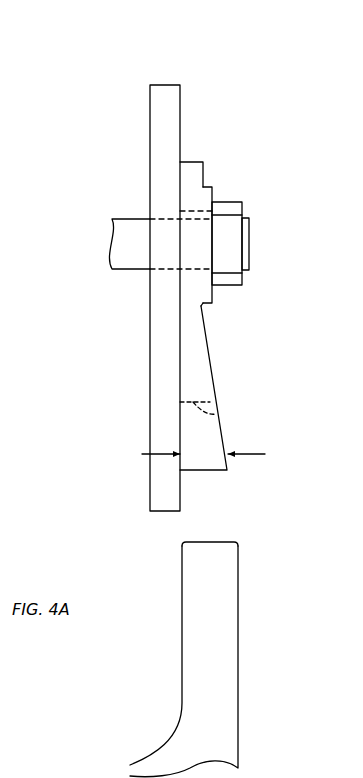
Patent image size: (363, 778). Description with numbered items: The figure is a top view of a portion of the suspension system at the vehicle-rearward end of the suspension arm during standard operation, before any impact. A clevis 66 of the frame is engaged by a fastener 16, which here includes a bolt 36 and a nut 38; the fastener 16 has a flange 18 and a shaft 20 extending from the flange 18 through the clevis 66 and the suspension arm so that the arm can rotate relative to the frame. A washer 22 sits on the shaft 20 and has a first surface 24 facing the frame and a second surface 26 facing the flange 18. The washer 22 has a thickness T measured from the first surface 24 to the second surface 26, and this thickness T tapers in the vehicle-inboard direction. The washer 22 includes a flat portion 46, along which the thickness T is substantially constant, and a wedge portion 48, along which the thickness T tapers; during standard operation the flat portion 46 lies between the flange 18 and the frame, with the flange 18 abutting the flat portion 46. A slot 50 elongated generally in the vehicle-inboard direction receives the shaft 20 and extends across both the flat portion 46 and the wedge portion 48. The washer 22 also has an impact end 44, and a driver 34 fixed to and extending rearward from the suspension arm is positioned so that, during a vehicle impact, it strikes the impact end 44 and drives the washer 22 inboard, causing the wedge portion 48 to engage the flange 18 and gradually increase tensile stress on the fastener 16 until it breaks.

The clevis 66 is at (150, 110).
The flat portion 46 is at (195, 163).
The flange 18 is at (212, 191).
The nut 38 is at (244, 280).
The bolt 36 is at (130, 236).
The shaft 20 is at (122, 272).
The fastener 16 is at (118, 204).
The washer 22 is at (211, 367).
The first surface 24 is at (178, 354).
The slot 50 is at (218, 414).
The second surface 26 is at (222, 437).
The thickness T is at (194, 455).
The wedge portion 48 is at (200, 458).
The impact end 44 is at (220, 542).
The driver 34 is at (230, 728).